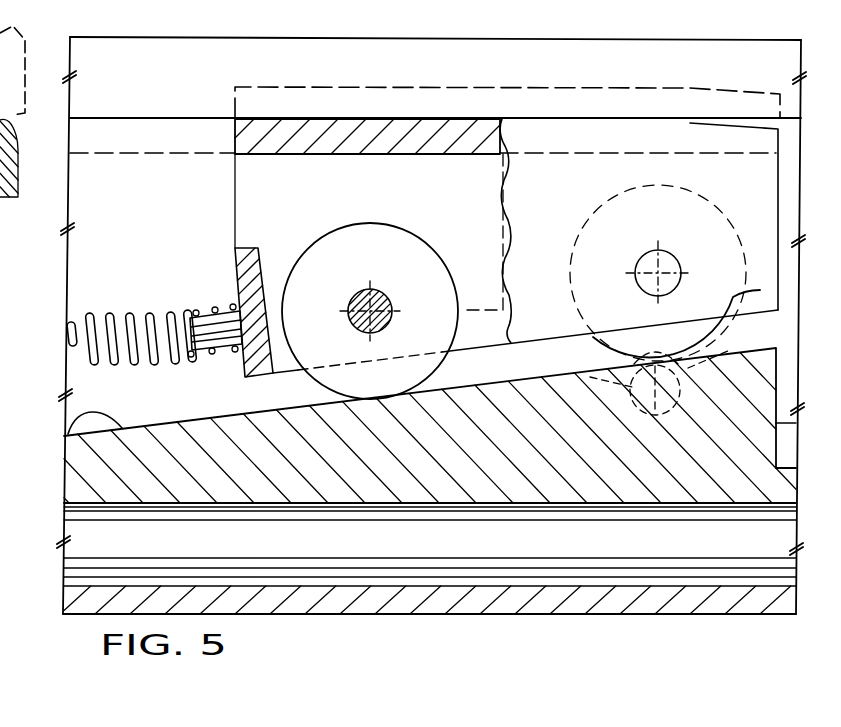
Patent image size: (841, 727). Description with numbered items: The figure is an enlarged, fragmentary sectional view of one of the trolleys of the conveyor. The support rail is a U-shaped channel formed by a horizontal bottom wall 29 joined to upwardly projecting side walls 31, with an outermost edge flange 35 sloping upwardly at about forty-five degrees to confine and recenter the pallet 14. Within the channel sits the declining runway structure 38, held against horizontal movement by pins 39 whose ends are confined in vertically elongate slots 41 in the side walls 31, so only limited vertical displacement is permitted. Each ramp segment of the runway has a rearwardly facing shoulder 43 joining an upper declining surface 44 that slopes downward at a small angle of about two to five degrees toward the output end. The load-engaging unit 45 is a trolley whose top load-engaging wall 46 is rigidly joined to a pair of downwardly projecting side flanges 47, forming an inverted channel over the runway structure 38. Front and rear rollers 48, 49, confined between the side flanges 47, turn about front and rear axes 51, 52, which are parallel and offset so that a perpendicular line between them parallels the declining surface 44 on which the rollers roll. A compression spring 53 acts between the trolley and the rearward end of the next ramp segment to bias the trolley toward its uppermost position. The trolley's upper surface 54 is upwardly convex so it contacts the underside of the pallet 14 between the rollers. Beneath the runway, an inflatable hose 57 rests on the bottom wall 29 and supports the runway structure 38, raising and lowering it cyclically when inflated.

The pallet 14 is at (18, 43).
The bottom wall 29 is at (85, 598).
The side wall 31 is at (77, 278).
The edge flange 35 is at (552, 50).
The runway structure 38 is at (273, 455).
The pin 39 is at (735, 343).
The vertically elongate slot 41 is at (531, 375).
The rearwardly facing shoulder 43 is at (778, 423).
The upper declining surface 44 is at (68, 428).
The load-engaging unit 45 is at (719, 124).
The top load-engaging wall 46 is at (282, 137).
The side flange 47 is at (250, 176).
The front roller 48 is at (337, 243).
The rear roller 49 is at (760, 290).
The front axis 51 is at (365, 300).
The rear axis 52 is at (660, 270).
The compression spring 53 is at (132, 326).
The upper surface 54 is at (332, 90).
The inflatable hose 57 is at (373, 545).